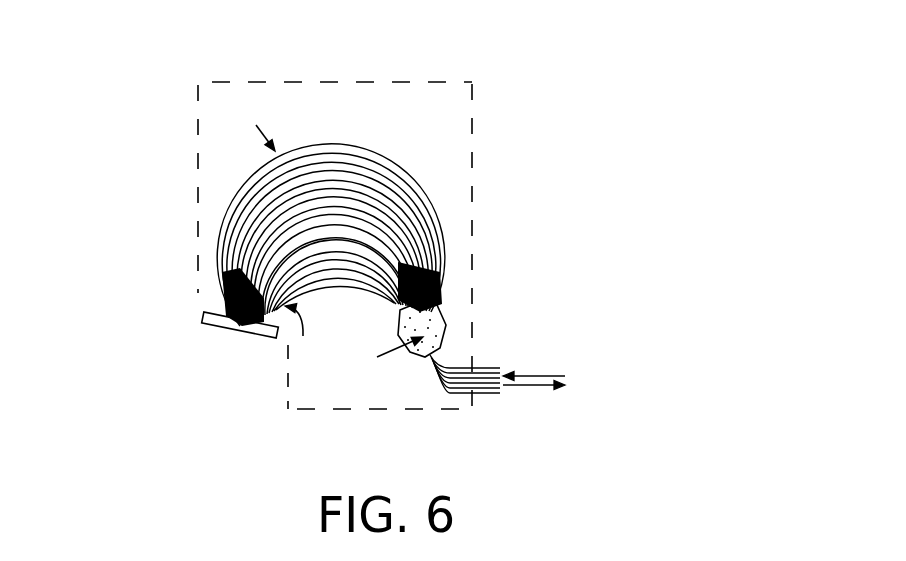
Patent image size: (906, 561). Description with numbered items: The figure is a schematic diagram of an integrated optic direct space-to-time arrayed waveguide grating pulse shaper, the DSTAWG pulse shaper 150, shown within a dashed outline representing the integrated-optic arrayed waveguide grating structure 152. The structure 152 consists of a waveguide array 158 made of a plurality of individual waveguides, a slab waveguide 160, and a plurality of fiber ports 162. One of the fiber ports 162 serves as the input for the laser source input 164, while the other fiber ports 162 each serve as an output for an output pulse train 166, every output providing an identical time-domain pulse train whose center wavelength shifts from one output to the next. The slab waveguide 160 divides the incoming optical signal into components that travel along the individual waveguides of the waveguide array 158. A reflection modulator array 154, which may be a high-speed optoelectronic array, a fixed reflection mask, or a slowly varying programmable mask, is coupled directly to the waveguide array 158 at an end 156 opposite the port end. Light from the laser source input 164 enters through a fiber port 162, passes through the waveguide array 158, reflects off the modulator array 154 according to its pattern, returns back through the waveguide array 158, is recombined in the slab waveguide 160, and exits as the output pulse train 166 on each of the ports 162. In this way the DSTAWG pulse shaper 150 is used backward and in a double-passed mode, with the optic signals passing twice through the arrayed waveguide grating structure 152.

The DSTAWG pulse shaper 150 is at (612, 53).
The integrated-optic arrayed waveguide grating structure 152 is at (197, 89).
The modulator array 154 is at (204, 320).
The end of the waveguide array 156 is at (297, 339).
The waveguide array 158 is at (430, 186).
The slab waveguide 160 is at (427, 323).
The fiber ports 162 is at (483, 413).
The laser source input 164 is at (645, 347).
The output pulse train 166 is at (657, 406).